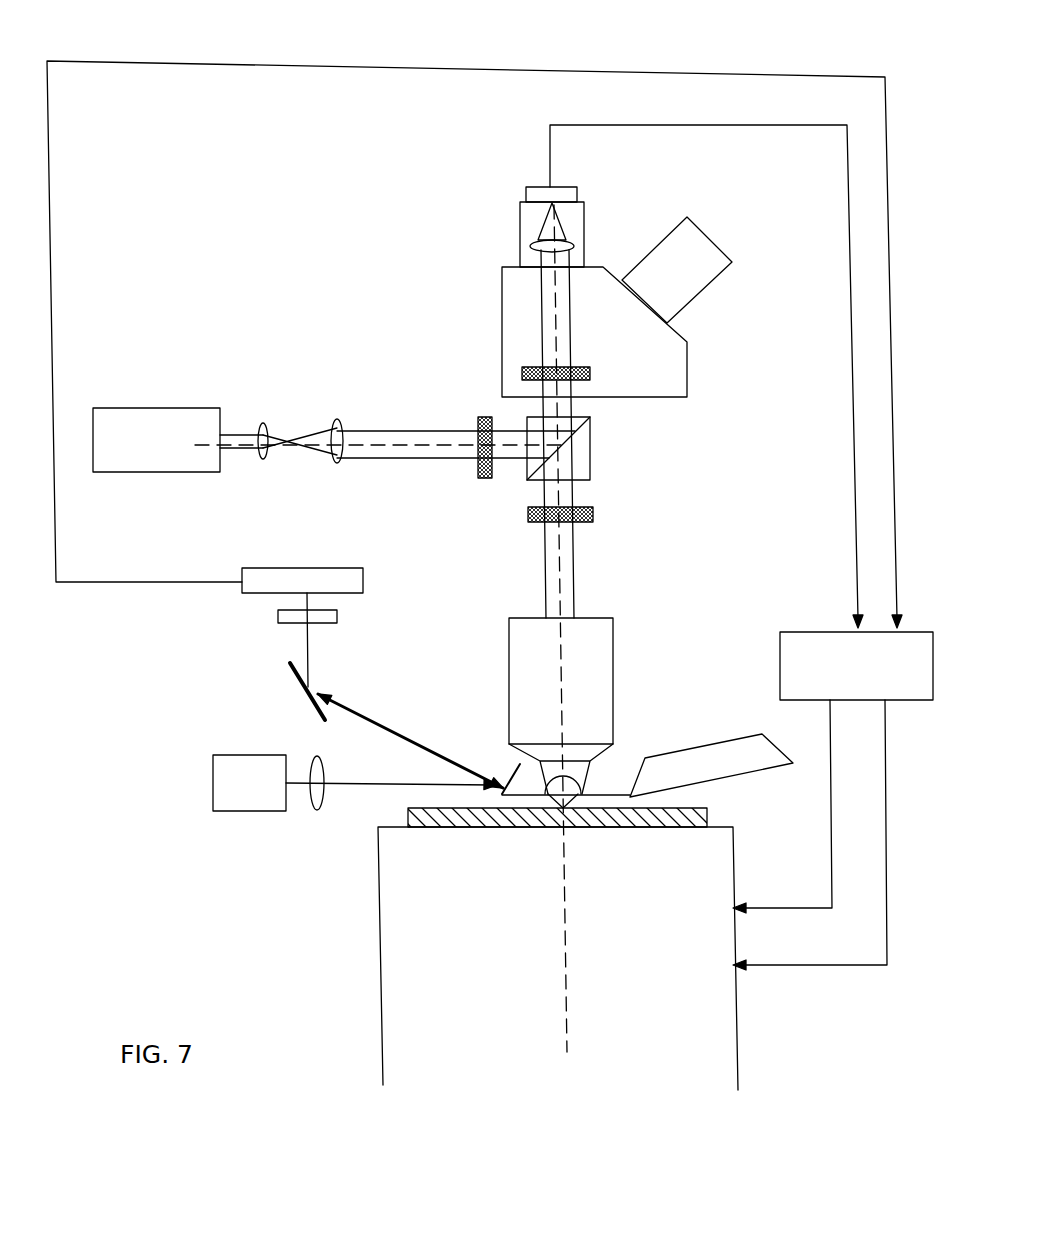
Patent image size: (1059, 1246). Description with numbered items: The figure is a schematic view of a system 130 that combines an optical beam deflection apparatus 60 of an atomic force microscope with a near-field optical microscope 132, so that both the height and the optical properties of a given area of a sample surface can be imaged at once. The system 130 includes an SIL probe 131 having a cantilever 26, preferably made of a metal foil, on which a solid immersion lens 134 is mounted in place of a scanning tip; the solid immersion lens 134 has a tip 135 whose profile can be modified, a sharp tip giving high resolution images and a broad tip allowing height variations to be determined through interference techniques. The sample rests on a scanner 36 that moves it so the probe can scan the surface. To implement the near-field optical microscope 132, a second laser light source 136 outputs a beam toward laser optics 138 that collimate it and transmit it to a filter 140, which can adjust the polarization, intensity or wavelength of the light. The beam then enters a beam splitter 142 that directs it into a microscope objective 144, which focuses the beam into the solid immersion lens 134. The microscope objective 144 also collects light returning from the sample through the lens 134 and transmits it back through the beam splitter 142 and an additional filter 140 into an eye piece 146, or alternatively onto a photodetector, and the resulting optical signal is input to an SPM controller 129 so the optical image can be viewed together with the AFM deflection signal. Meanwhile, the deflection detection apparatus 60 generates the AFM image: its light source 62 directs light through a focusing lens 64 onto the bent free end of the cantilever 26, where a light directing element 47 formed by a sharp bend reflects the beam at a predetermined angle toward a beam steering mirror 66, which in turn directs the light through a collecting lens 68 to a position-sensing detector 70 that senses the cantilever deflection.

The system 130 is at (722, 48).
The near-field optical microscope 132 is at (428, 335).
The second laser light source 136 is at (130, 408).
The laser optics 138 is at (306, 482).
The filter 140 is at (578, 368).
The beam splitter 142 is at (593, 450).
The microscope objective 144 is at (607, 680).
The eye piece 146 is at (707, 275).
The SPM controller 129 is at (790, 632).
The SIL probe 131 is at (618, 772).
The solid immersion lens 134 is at (535, 783).
The tip 135 is at (572, 780).
The cantilever 26 is at (592, 783).
The scanner 36 is at (390, 860).
The light directing element 47 is at (502, 766).
The deflection detection apparatus 60 is at (240, 672).
The light source 62 is at (245, 812).
The focusing lens 64 is at (322, 805).
The beam steering mirror 66 is at (295, 672).
The collecting lens 68 is at (337, 617).
The position-sensing detector 70 is at (363, 581).